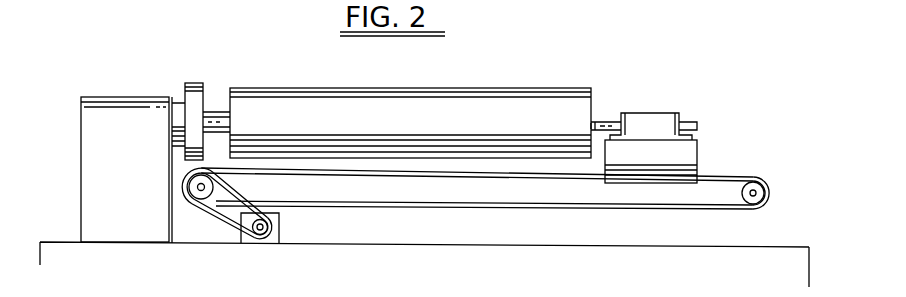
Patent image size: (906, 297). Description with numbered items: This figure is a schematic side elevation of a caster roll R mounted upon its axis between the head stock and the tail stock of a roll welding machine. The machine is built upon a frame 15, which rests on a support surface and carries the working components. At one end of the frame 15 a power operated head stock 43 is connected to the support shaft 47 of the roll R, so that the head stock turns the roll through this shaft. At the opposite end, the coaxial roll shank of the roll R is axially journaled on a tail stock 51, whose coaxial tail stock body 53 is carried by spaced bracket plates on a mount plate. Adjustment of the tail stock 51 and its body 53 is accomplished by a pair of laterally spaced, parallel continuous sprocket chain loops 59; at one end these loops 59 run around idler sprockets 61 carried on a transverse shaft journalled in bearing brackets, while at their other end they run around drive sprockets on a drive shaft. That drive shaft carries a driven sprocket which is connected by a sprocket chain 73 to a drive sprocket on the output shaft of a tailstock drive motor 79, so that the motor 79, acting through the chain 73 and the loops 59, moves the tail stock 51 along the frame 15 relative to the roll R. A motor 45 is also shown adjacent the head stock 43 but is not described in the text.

The frame 15 is at (686, 247).
The motor 45 is at (92, 130).
The power operated head stock 43 is at (195, 84).
The support shaft 47 is at (217, 112).
The roll R is at (450, 88).
The tail stock 51 is at (607, 120).
The tail stock body 53 is at (653, 114).
The sprocket chain loops 59 is at (727, 175).
The idler sprockets 61 is at (757, 200).
The sprocket chain 73 is at (227, 223).
The tailstock drive motor 79 is at (280, 229).